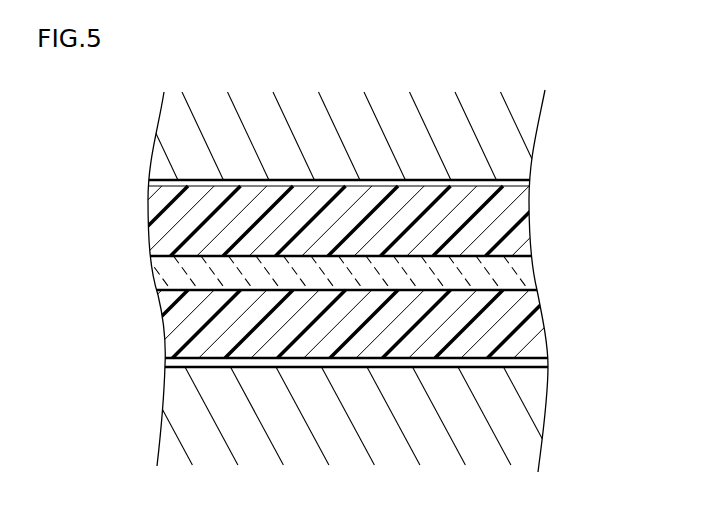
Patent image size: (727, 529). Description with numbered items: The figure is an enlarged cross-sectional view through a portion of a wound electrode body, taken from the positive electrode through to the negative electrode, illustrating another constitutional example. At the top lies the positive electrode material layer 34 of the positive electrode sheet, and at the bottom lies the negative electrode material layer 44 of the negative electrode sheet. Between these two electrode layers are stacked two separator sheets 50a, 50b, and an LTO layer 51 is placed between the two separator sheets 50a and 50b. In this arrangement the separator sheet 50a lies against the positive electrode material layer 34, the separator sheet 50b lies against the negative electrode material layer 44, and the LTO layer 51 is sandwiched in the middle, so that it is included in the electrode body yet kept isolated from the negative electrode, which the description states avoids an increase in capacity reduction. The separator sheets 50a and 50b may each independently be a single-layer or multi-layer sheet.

The positive electrode material layer 34 is at (532, 119).
The separator sheet 50a is at (522, 211).
The LTO layer 51 is at (532, 266).
The separator sheet 50b is at (537, 327).
The negative electrode material layer 44 is at (532, 432).